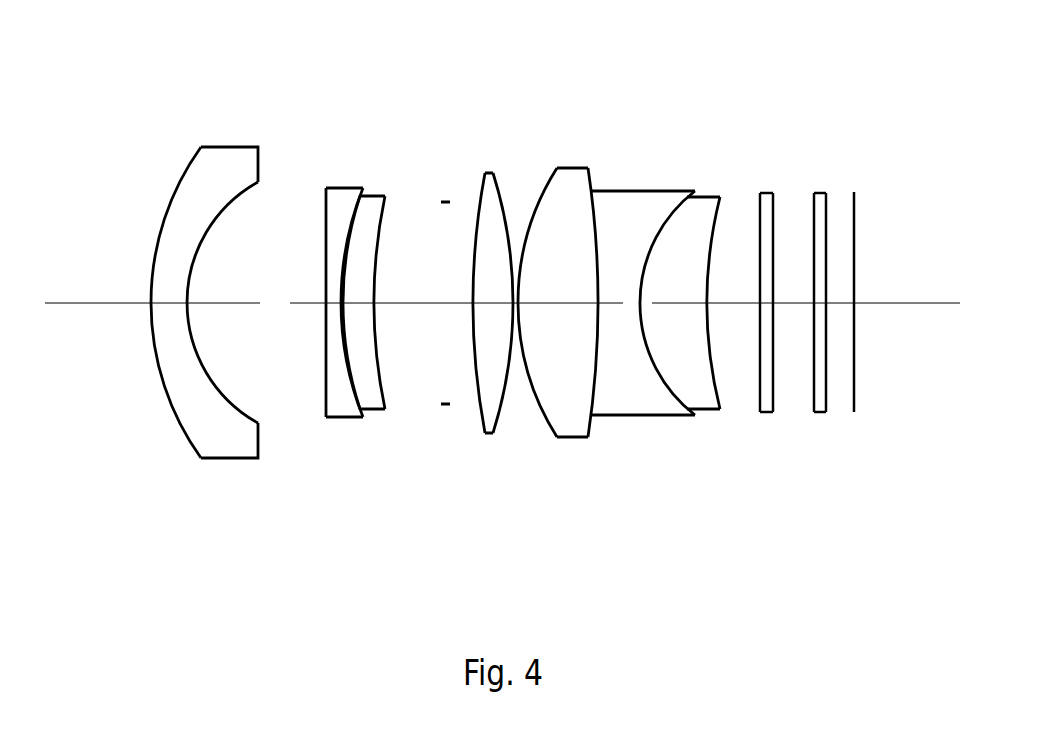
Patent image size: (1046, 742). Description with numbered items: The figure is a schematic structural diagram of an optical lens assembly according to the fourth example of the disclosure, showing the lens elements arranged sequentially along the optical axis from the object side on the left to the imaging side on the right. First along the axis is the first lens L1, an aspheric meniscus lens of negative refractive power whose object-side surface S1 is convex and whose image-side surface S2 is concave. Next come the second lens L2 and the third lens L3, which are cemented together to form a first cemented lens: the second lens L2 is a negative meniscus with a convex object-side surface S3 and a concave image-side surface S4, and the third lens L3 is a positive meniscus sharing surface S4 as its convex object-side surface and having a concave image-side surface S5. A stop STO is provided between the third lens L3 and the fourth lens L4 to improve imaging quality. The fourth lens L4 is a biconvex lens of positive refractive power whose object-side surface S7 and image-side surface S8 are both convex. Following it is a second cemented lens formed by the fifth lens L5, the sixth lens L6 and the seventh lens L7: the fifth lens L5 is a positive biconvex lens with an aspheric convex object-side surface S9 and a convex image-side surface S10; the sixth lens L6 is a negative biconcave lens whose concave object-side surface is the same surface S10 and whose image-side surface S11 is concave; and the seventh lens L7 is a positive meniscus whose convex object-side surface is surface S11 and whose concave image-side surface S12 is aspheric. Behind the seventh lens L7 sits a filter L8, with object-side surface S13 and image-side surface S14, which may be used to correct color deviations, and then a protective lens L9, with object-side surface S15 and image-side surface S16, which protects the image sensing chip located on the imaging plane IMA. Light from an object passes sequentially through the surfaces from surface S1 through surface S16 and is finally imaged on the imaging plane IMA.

The first lens L1 is at (162, 325).
The second lens L2 is at (265, 325).
The third lens L3 is at (315, 325).
The fourth lens L4 is at (453, 325).
The fifth lens L5 is at (539, 325).
The sixth lens L6 is at (630, 325).
The seventh lens L7 is at (675, 325).
The filter L8 is at (742, 325).
The protective lens L9 is at (858, 324).
The stop STO is at (445, 203).
The imaging plane IMA is at (855, 250).
The object-side surface of the first lens S1 is at (170, 223).
The image-side surface of the first lens S2 is at (211, 228).
The object-side surface of the second lens S3 is at (324, 246).
The image-side surface of the second lens S4 is at (355, 227).
The image-side surface of the third lens S5 is at (377, 222).
The object-side surface of the fourth lens S7 is at (475, 237).
The image-side surface of the fourth lens S8 is at (503, 187).
The object-side surface of the fifth lens S9 is at (547, 197).
The image-side surface of the fifth lens S10 is at (592, 203).
The image-side surface of the sixth lens S11 is at (653, 243).
The image-side surface of the seventh lens S12 is at (708, 257).
The object-side surface of the filter S13 is at (758, 247).
The image-side surface of the filter S14 is at (767, 193).
The object-side surface of the protective lens S15 is at (820, 193).
The image-side surface of the protective lens S16 is at (825, 242).